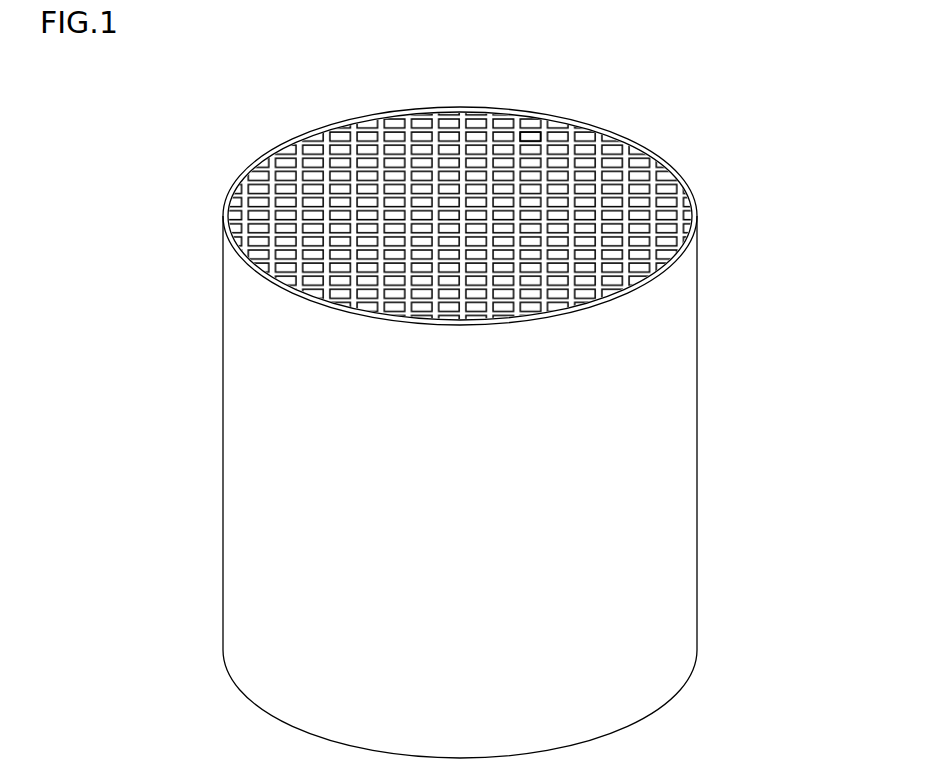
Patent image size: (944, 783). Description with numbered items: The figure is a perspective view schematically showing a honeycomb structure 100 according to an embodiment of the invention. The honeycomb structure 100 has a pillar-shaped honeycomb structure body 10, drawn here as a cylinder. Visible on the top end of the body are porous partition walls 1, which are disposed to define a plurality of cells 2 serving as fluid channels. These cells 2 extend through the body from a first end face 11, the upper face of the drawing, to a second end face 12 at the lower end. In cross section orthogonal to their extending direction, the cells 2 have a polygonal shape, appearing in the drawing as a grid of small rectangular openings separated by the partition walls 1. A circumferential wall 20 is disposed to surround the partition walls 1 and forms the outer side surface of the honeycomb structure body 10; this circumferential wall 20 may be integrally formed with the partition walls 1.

The honeycomb structure 100 is at (752, 84).
The honeycomb structure body 10 is at (676, 335).
The circumferential wall 20 is at (645, 485).
The first end face 11 is at (330, 126).
The second end face 12 is at (600, 737).
The partition walls 1 is at (438, 145).
The cells 2 is at (530, 135).